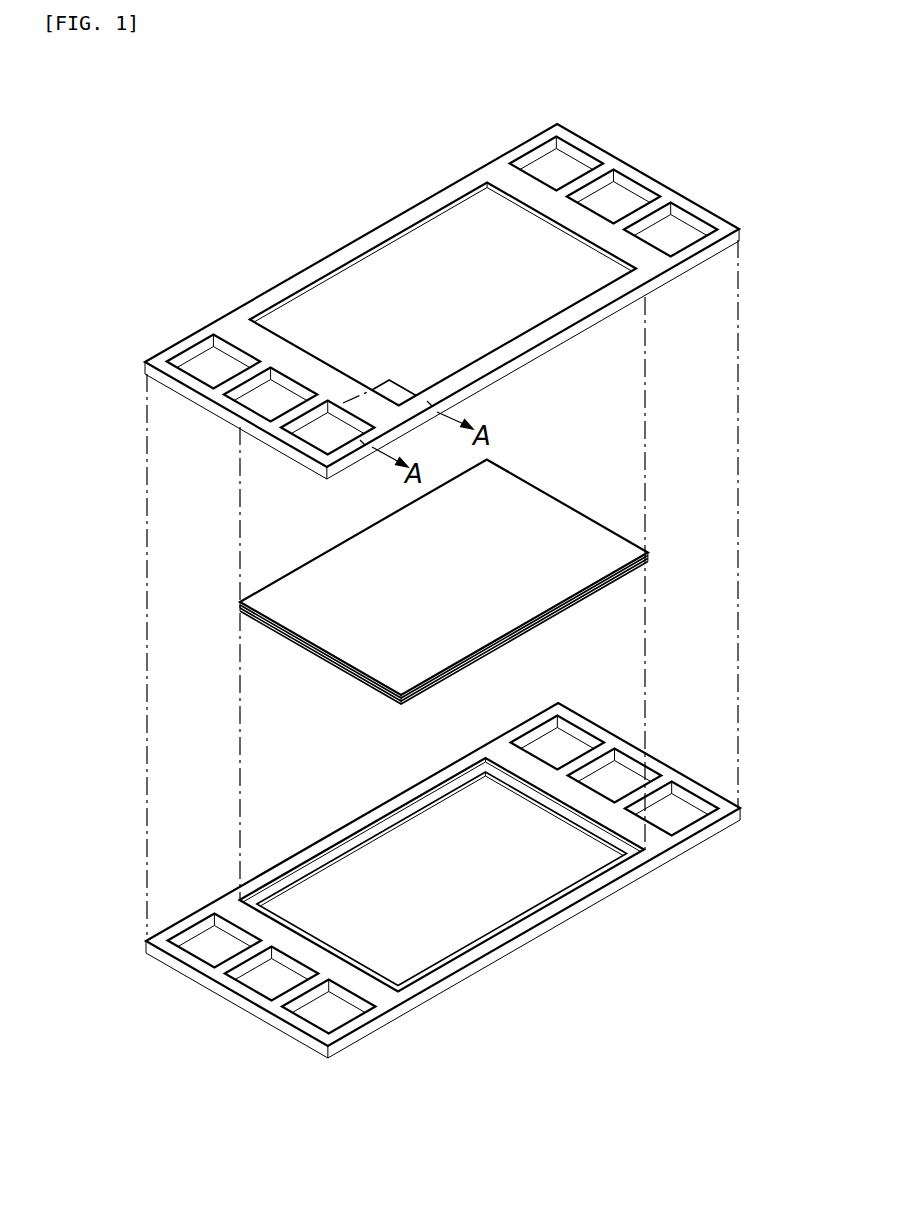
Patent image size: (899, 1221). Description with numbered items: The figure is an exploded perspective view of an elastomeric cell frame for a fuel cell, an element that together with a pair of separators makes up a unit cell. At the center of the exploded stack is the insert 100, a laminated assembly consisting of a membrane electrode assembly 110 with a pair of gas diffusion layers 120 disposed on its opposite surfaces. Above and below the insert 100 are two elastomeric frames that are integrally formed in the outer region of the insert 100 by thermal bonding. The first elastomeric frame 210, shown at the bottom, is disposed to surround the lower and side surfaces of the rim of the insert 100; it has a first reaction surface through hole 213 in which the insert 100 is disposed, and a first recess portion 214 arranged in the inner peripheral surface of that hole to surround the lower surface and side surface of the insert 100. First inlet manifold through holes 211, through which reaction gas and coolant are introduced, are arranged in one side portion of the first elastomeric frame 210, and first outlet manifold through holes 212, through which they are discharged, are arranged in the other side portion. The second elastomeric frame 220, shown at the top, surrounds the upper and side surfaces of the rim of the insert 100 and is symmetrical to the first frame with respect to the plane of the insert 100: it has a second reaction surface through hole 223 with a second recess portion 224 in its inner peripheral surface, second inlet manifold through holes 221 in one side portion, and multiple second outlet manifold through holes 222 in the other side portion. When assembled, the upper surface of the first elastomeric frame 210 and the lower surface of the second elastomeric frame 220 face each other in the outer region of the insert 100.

The insert 100 is at (123, 583).
The membrane electrode assembly 110 is at (240, 607).
The gas diffusion layers 120 is at (242, 612).
The first elastomeric frame 210 is at (185, 922).
The first inlet manifold through holes 211 is at (273, 979).
The first outlet manifold through holes 212 is at (620, 776).
The first reaction surface through hole 213 is at (395, 859).
The first recess portion 214 is at (293, 882).
The second elastomeric frame 220 is at (187, 340).
The second inlet manifold through holes 221 is at (273, 397).
The second outlet manifold through holes 222 is at (625, 203).
The second reaction surface through hole 223 is at (377, 291).
The second recess portion 224 is at (468, 212).